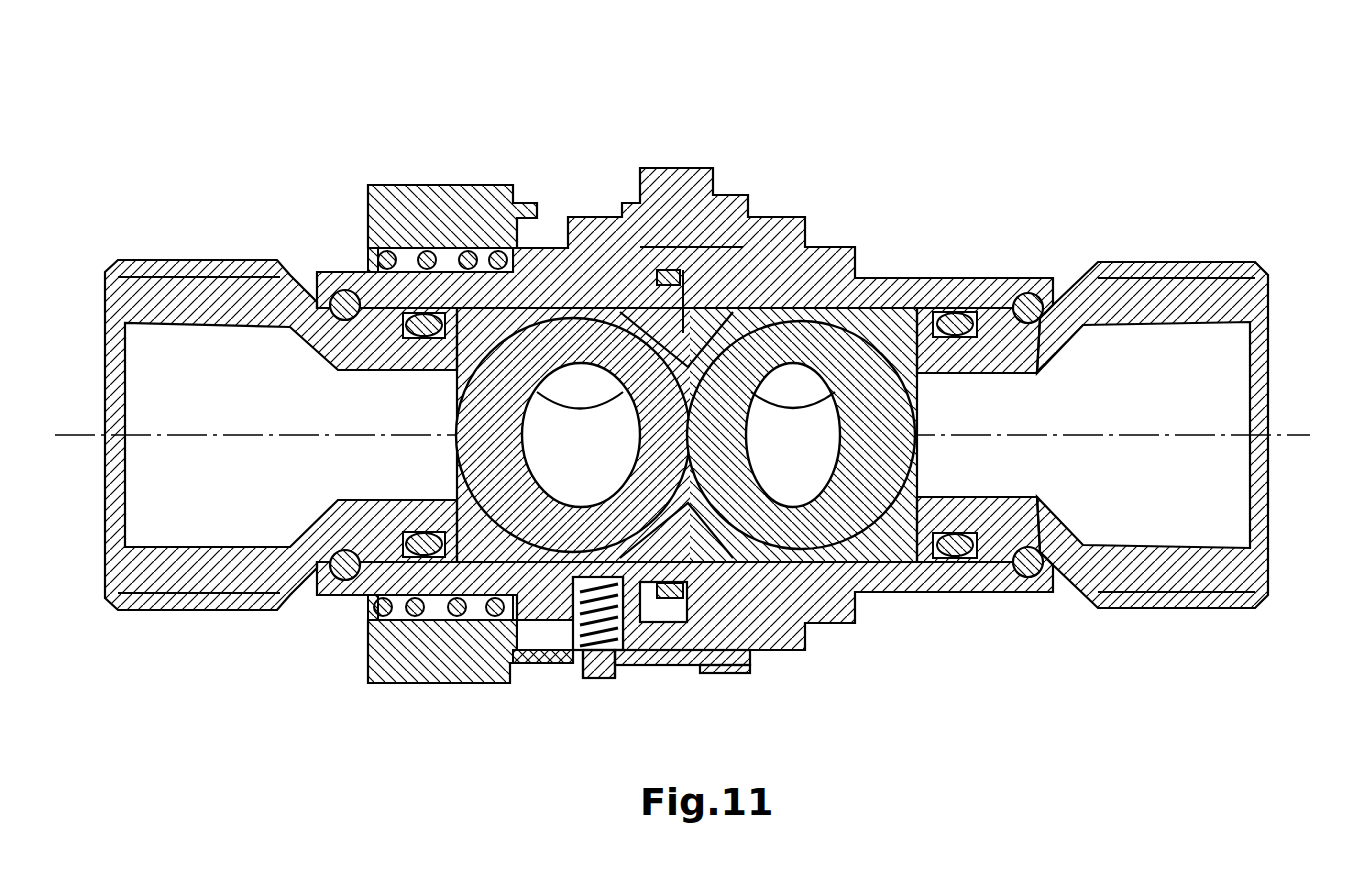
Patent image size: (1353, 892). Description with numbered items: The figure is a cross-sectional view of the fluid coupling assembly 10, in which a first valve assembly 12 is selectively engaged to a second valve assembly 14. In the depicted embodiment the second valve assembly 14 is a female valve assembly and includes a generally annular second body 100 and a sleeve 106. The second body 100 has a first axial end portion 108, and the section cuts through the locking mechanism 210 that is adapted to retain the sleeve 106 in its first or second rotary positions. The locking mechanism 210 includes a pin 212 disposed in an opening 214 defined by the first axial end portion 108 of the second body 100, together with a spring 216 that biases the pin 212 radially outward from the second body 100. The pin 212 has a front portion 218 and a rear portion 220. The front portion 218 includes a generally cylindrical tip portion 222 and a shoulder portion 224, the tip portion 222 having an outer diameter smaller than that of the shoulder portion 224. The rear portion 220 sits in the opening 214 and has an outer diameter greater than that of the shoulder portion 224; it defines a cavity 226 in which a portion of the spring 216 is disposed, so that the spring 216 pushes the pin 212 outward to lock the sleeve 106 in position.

The fluid coupling assembly 10 is at (297, 185).
The first valve assembly 12 is at (963, 253).
The second valve assembly 14 is at (228, 235).
The second body 100 is at (430, 605).
The sleeve 106 is at (410, 685).
The first axial end portion 108 is at (680, 657).
The locking mechanism 210 is at (600, 698).
The pin 212 is at (620, 690).
The opening 214 is at (573, 590).
The spring 216 is at (607, 578).
The front portion 218 is at (630, 670).
The rear portion 220 is at (567, 620).
The tip portion 222 is at (583, 652).
The shoulder portion 224 is at (567, 663).
The cavity 226 is at (662, 568).